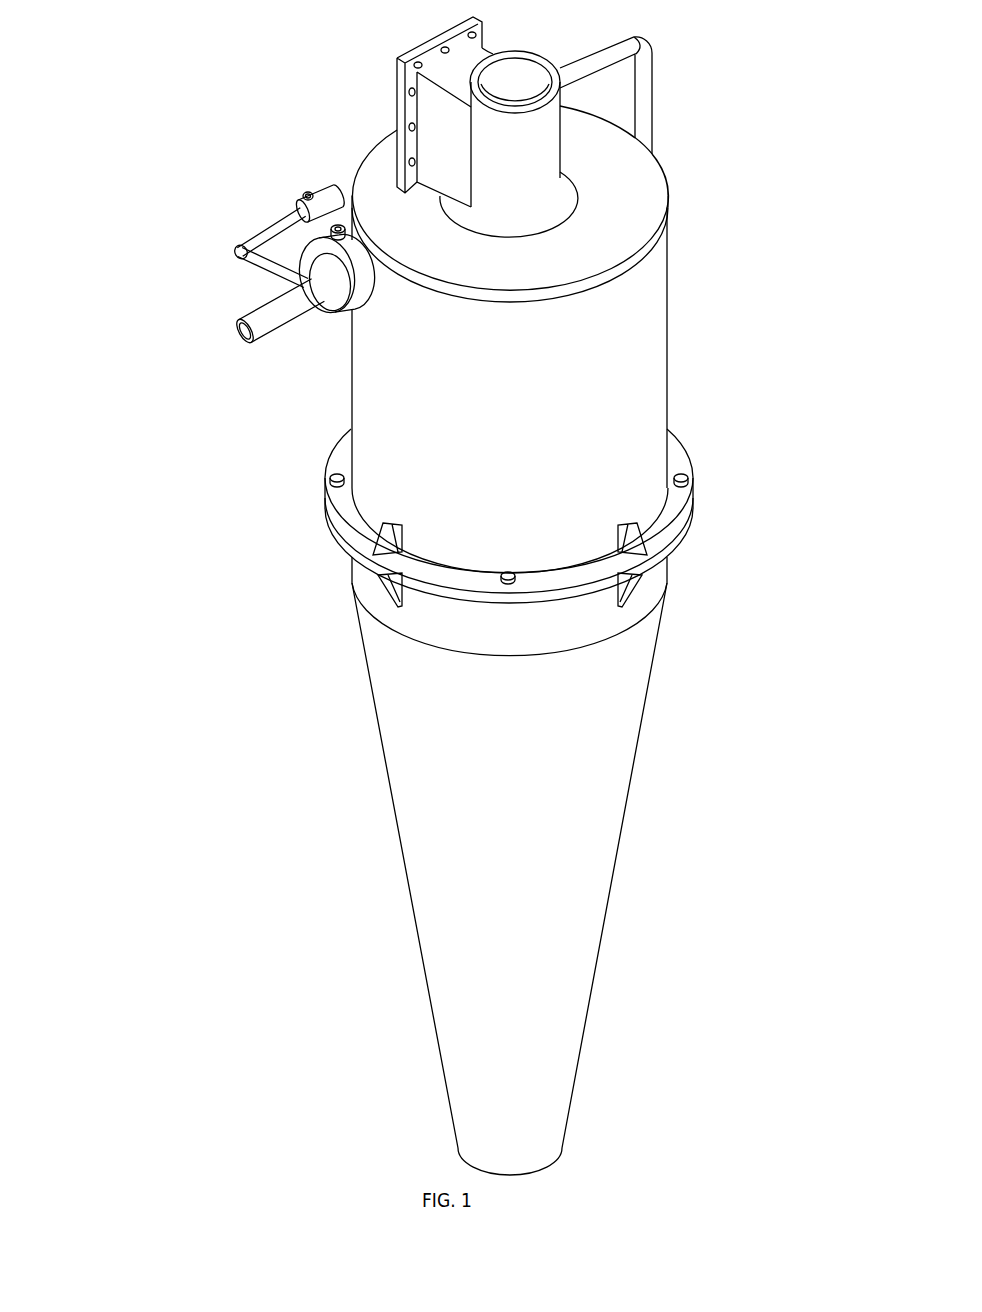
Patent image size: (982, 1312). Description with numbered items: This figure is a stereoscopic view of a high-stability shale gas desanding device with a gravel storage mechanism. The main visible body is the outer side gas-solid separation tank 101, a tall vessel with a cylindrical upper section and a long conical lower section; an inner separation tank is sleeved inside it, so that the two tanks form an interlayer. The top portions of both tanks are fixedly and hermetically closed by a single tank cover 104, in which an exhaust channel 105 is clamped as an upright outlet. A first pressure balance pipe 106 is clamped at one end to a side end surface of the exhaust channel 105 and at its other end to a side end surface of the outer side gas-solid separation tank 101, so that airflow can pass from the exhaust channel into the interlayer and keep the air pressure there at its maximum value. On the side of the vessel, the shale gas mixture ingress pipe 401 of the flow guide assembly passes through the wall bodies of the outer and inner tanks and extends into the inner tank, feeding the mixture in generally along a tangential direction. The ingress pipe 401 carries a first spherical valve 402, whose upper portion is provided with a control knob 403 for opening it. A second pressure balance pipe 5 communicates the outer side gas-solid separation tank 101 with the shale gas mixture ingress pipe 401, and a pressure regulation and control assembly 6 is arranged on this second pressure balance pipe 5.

The outer side gas-solid separation tank 101 is at (578, 787).
The tank cover 104 is at (635, 182).
The exhaust channel 105 is at (508, 197).
The first pressure balance pipe 106 is at (642, 100).
The shale gas mixture ingress pipe 401 is at (245, 331).
The first spherical valve 402 is at (335, 283).
The control knob 403 is at (334, 231).
The second pressure balance pipe 5 is at (338, 182).
The pressure regulation and control assembly 6 is at (308, 196).